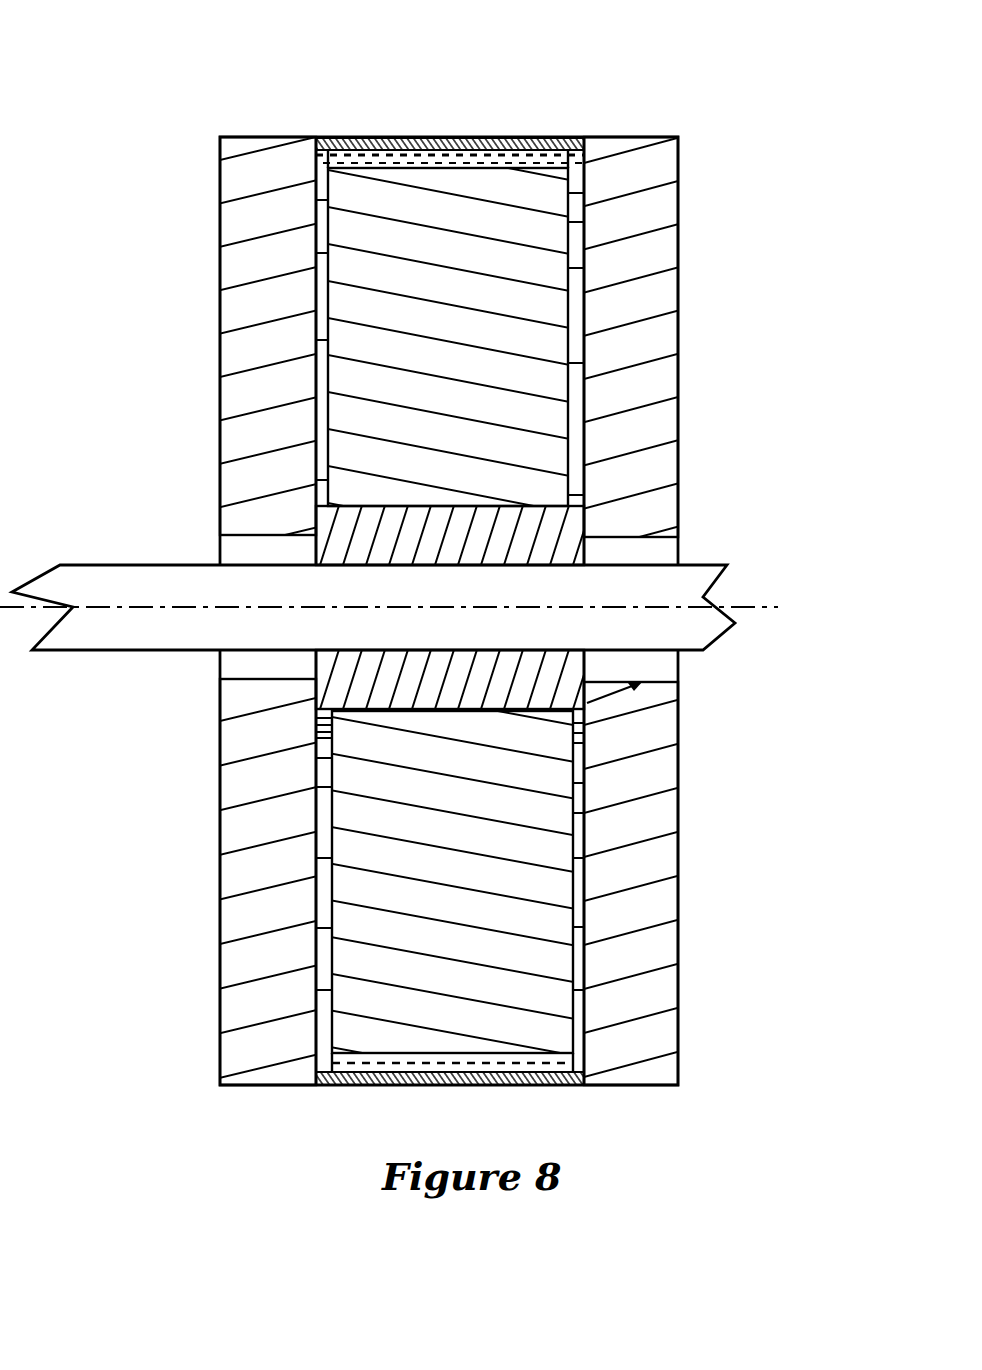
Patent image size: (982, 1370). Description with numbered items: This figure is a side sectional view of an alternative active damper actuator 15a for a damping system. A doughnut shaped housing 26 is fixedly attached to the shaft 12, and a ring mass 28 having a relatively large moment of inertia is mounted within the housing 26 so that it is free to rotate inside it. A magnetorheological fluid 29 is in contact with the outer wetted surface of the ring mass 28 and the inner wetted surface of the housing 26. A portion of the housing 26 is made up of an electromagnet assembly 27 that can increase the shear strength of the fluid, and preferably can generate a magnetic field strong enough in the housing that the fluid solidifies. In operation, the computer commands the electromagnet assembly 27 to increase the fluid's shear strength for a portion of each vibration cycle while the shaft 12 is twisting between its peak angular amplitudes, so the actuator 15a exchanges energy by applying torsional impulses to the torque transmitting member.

The damper actuator 15a is at (216, 955).
The electromagnet assembly 27 is at (220, 182).
The magnetorheological fluid 29 is at (530, 138).
The ring mass 28 is at (337, 805).
The housing 26 is at (383, 1085).
The shaft 12 is at (696, 652).